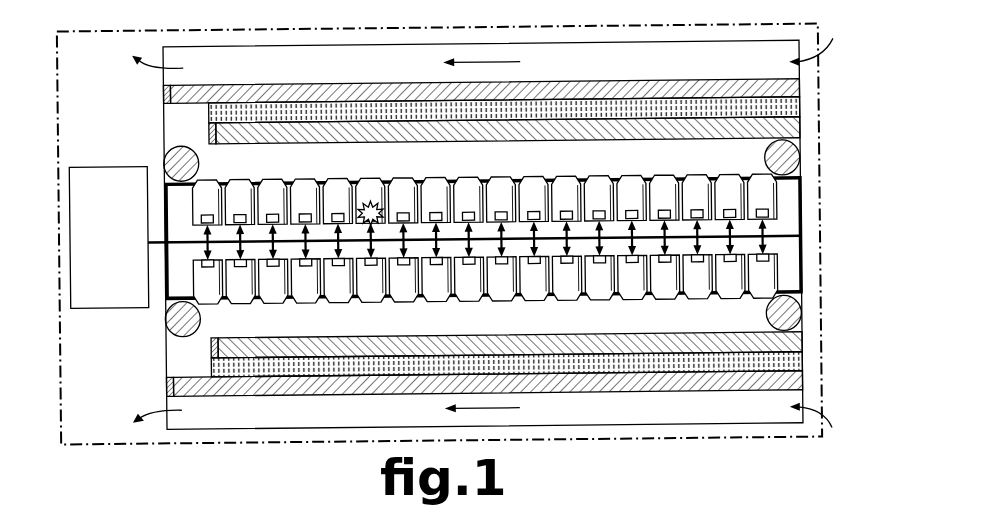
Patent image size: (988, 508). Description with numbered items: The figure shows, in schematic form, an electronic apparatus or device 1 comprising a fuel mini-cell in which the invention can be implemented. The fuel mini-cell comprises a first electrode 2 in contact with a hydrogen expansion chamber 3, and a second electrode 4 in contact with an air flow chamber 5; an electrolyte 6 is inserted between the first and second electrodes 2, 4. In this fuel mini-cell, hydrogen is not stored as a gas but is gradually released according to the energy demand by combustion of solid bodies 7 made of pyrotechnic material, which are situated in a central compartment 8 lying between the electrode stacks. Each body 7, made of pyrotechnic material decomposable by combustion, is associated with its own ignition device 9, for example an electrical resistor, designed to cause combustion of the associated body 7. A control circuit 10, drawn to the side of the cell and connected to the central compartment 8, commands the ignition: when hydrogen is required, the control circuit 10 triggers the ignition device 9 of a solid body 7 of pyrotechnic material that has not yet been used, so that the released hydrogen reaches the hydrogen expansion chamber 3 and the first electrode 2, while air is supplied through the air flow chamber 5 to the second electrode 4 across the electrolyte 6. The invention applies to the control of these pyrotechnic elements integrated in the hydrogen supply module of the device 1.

The device 1 is at (693, 435).
The first electrode 2 is at (793, 345).
The hydrogen expansion chamber 3 is at (209, 155).
The second electrode 4 is at (180, 384).
The air flow chamber 5 is at (197, 50).
The electrolyte 6 is at (793, 367).
The solid bodies made of pyrotechnic material 7 is at (763, 196).
The central compartment 8 is at (793, 241).
The ignition device 9 is at (763, 215).
The control circuit 10 is at (99, 238).